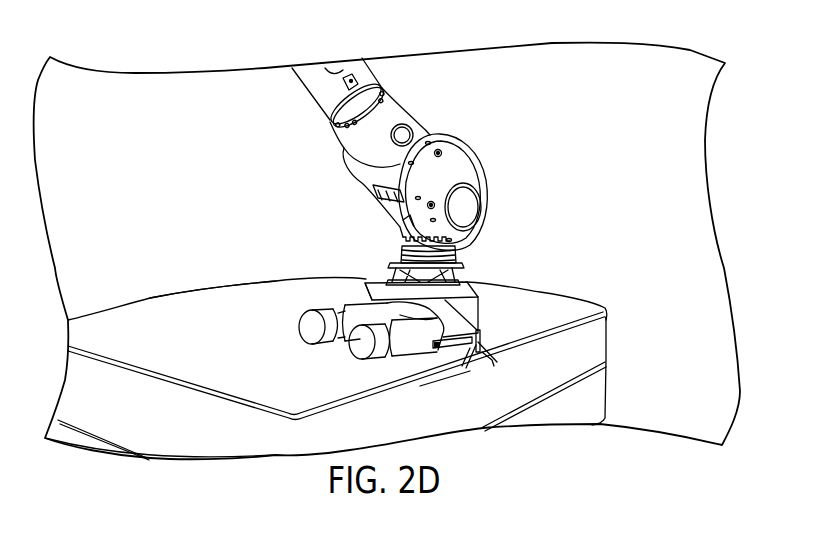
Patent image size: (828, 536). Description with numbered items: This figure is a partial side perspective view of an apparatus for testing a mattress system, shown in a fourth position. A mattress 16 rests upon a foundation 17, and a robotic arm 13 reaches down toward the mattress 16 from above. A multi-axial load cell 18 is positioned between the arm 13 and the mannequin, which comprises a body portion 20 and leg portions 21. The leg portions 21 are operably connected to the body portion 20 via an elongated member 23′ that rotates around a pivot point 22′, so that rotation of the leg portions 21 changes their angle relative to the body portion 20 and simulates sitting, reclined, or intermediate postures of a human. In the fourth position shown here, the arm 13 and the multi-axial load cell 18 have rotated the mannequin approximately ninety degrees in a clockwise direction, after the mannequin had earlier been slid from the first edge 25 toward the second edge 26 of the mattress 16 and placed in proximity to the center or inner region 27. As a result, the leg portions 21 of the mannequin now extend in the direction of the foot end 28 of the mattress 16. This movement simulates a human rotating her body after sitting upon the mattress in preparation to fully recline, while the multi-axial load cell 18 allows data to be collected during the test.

The arm 13 is at (449, 171).
The mattress 16 is at (332, 369).
The foundation 17 is at (89, 448).
The multi-axial load cell 18 is at (460, 258).
The body portion 20 is at (451, 328).
The leg portions 21 is at (397, 330).
The pivot point 22′ is at (480, 342).
The elongated member 23′ is at (455, 344).
The first edge 25 is at (441, 367).
The second edge 26 is at (248, 281).
The center or inner region 27 is at (336, 322).
The foot end 28 is at (160, 362).